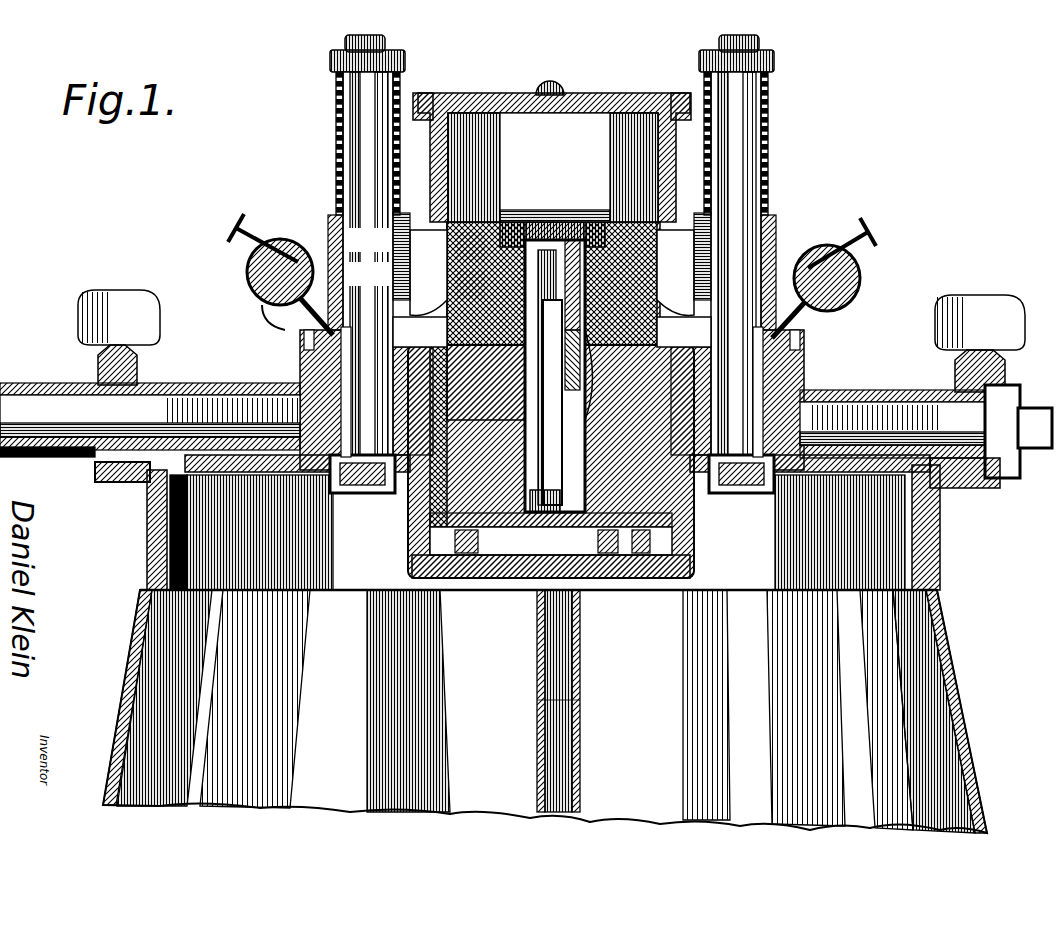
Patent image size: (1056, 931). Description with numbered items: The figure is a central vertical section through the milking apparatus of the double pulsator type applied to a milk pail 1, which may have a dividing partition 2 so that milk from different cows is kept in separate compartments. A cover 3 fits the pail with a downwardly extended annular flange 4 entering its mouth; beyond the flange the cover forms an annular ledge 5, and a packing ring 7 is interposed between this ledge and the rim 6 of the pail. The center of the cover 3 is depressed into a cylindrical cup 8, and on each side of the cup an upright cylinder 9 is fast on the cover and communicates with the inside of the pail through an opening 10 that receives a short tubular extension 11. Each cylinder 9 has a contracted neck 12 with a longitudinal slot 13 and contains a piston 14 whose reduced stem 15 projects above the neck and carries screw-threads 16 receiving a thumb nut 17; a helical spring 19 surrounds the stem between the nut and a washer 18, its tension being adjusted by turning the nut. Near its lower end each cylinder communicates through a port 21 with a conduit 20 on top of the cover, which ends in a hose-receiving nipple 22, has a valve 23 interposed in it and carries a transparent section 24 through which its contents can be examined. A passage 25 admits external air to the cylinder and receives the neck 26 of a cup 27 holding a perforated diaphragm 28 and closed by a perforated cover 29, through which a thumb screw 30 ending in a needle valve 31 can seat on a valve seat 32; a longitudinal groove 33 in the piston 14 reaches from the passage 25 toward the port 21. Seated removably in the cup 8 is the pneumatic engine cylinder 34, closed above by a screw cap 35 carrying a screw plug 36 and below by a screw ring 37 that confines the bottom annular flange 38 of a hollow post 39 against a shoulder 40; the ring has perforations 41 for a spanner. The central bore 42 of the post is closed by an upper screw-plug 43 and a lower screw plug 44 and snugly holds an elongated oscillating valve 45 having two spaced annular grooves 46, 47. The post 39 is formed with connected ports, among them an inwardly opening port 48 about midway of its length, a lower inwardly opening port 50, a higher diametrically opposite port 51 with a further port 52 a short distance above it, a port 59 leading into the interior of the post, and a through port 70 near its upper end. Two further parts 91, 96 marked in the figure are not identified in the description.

The milk pail 1 is at (960, 650).
The dividing partition 2 is at (537, 704).
The cover 3 is at (985, 480).
The annular flange 4 is at (945, 540).
The annular ledge 5 is at (105, 470).
The rim 6 is at (150, 498).
The packing ring 7 is at (168, 482).
The cylindrical cup 8 is at (408, 572).
The upright cylinder 9 is at (410, 465).
The opening 10 is at (400, 505).
The tubular extension 11 is at (440, 560).
The neck 12 is at (326, 212).
The longitudinal slot 13 is at (478, 168).
The piston 14 is at (325, 382).
The stem 15 is at (358, 122).
The screw-threads 16 is at (386, 46).
The thumb nut 17 is at (404, 68).
The washer 18 is at (400, 220).
The helical spring 19 is at (428, 112).
The conduit 20 is at (546, 532).
The port 21 is at (355, 495).
The hose-receiving nipple 22 is at (50, 385).
The valve 23 is at (150, 358).
The transparent section 24 is at (212, 388).
The passage 25 is at (310, 340).
The neck of cup 26 is at (262, 322).
The cup 27 is at (248, 305).
The perforated diaphragm 28 is at (298, 240).
The perforated cover 29 is at (240, 282).
The thumb screw 30 is at (232, 226).
The needle valve 31 is at (368, 240).
The valve seat 32 is at (546, 280).
The longitudinal groove 33 is at (330, 368).
The cylinder 34 is at (690, 556).
The screw cap 35 is at (618, 96).
The screw plug 36 is at (562, 88).
The screw ring 37 is at (650, 556).
The bottom annular flange 38 is at (596, 556).
The hollow post 39 is at (600, 500).
The shoulder 40 is at (430, 532).
The perforations 41 is at (468, 555).
The central bore 42 is at (578, 228).
The screw-plug 43 is at (582, 371).
The screw plug 44 is at (562, 632).
The oscillating valve 45 is at (590, 402).
The annular groove 46 is at (552, 342).
The annular groove 47 is at (520, 555).
The port 48 is at (490, 200).
The port 50 is at (486, 396).
The port 51 is at (610, 375).
The port 52 is at (603, 337).
The port 59 is at (602, 285).
The through port 70 is at (545, 240).
The body section 91 is at (470, 247).
The body section 96 is at (598, 327).